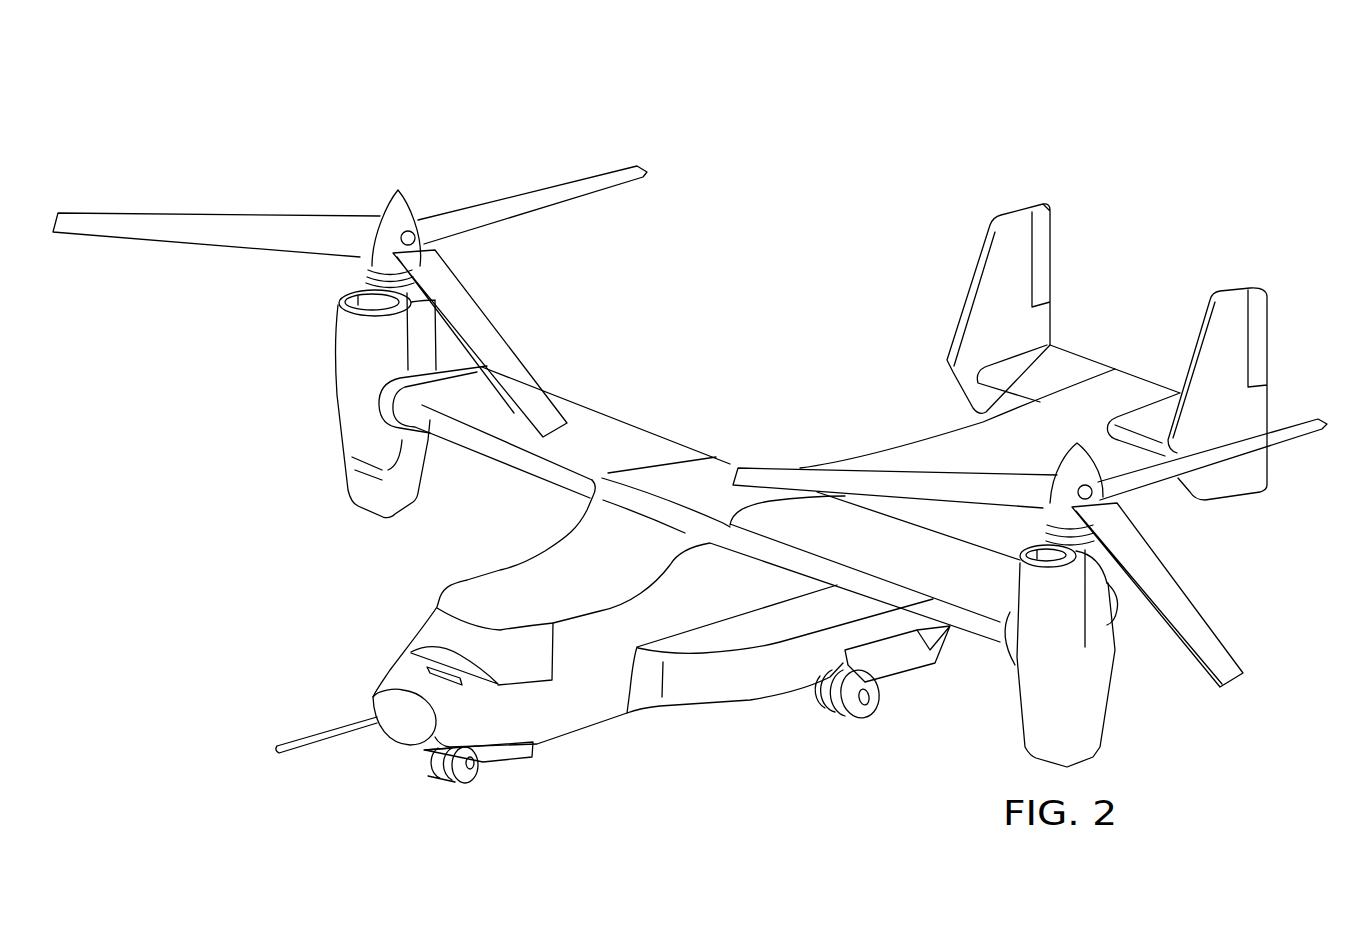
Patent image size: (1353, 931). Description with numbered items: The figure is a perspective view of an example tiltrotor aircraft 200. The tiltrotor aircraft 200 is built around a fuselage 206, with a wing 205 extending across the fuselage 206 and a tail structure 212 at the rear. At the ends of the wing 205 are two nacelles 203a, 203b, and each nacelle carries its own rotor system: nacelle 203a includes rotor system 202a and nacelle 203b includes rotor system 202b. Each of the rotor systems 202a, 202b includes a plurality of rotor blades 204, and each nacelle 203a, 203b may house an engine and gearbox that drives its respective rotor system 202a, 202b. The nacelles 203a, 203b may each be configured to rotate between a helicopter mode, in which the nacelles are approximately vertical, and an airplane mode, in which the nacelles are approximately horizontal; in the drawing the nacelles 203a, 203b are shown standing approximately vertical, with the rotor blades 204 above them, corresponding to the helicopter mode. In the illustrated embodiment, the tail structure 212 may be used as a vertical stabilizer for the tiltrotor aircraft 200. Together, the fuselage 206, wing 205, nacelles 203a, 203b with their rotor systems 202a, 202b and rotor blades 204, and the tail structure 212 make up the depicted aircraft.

The tiltrotor aircraft 200 is at (576, 114).
The rotor system 202a is at (383, 200).
The rotor system 202b is at (1057, 467).
The nacelle 203a is at (337, 407).
The nacelle 203b is at (1112, 683).
The rotor blades 204 is at (537, 213).
The wing 205 is at (633, 423).
The fuselage 206 is at (593, 733).
The tail structure 212 is at (1083, 355).